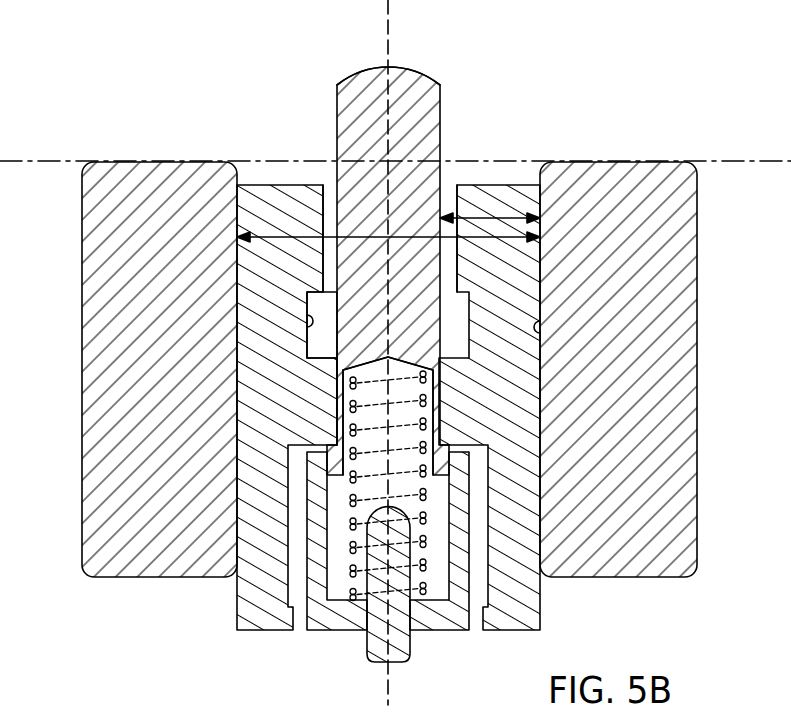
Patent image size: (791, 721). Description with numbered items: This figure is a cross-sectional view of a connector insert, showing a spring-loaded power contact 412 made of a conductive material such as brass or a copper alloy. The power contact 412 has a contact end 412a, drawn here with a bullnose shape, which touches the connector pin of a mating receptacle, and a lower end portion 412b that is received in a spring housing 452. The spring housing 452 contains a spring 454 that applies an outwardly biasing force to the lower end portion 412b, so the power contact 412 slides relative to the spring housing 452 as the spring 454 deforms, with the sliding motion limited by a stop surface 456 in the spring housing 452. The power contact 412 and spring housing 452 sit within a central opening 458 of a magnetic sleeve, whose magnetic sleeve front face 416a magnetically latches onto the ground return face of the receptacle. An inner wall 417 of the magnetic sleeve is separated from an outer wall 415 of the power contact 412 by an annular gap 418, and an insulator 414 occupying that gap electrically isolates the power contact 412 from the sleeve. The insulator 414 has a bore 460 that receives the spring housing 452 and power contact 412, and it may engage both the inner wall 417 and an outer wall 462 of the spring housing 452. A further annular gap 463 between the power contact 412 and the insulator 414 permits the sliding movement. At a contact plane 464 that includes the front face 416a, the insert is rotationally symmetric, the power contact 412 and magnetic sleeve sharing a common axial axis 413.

The power contact 412 is at (427, 93).
The contact end 412a is at (362, 74).
The lower end portion 412b is at (440, 400).
The common axial axis 413 is at (390, 33).
The insulator 414 is at (258, 200).
The outer wall 415 is at (453, 188).
The magnetic sleeve front face 416a is at (156, 160).
The inner wall 417 is at (541, 323).
The annular gap 418 is at (518, 213).
The spring housing 452 is at (317, 580).
The spring 454 is at (423, 587).
The stop surface 456 is at (443, 475).
The central opening 458 is at (297, 233).
The bore 460 is at (305, 314).
The outer wall 462 is at (300, 408).
The annular gap 463 is at (330, 198).
The contact plane 464 is at (762, 158).